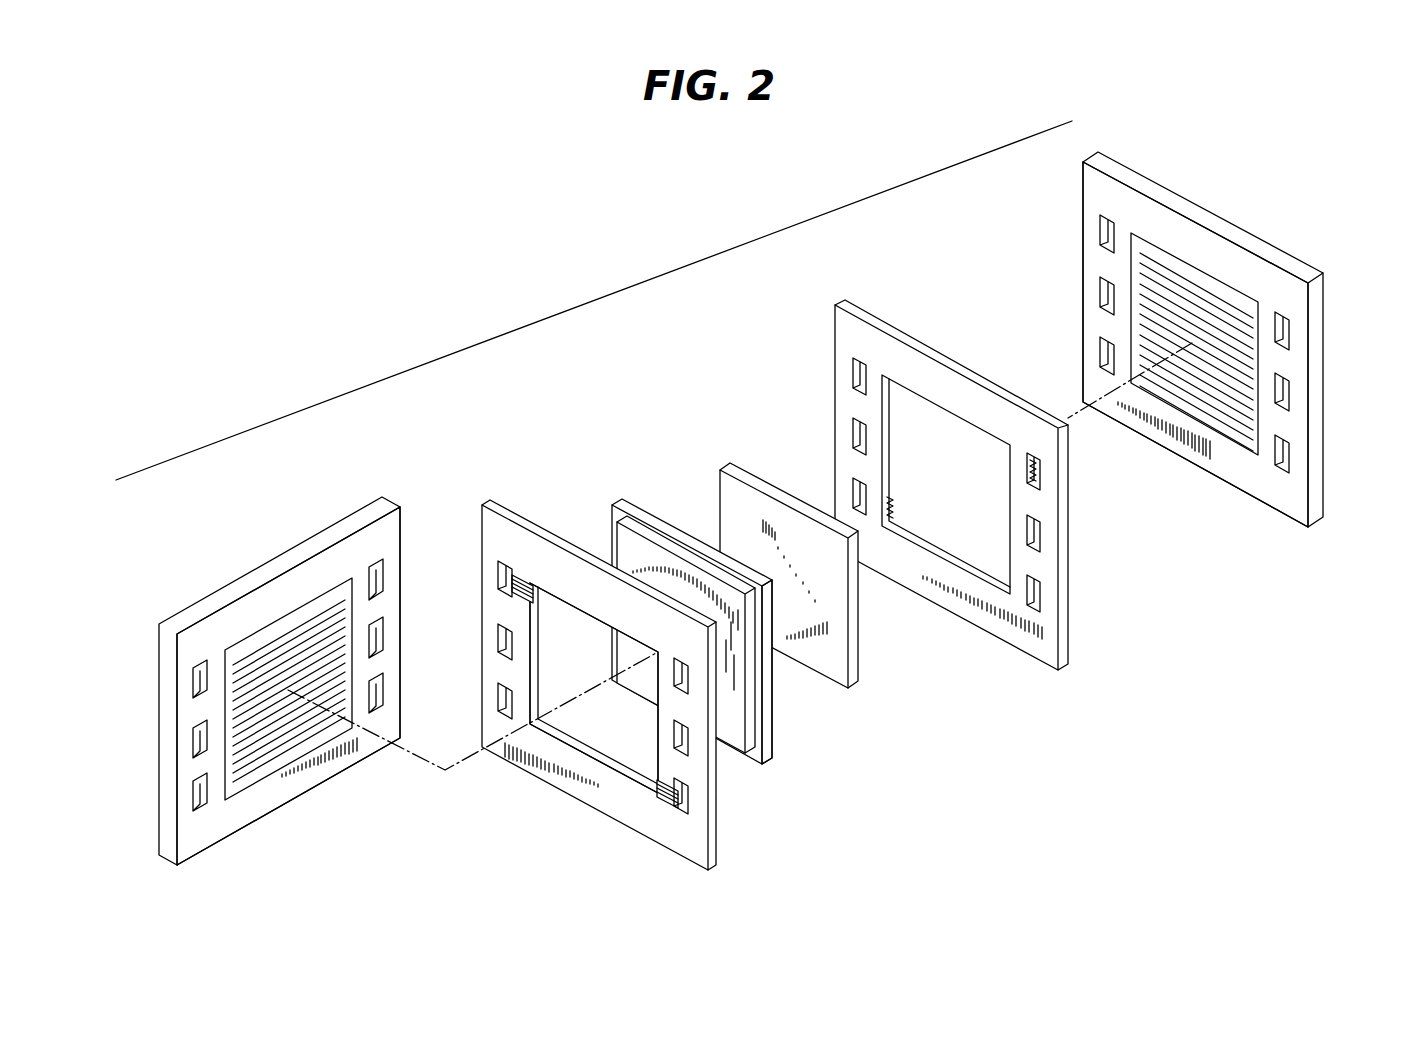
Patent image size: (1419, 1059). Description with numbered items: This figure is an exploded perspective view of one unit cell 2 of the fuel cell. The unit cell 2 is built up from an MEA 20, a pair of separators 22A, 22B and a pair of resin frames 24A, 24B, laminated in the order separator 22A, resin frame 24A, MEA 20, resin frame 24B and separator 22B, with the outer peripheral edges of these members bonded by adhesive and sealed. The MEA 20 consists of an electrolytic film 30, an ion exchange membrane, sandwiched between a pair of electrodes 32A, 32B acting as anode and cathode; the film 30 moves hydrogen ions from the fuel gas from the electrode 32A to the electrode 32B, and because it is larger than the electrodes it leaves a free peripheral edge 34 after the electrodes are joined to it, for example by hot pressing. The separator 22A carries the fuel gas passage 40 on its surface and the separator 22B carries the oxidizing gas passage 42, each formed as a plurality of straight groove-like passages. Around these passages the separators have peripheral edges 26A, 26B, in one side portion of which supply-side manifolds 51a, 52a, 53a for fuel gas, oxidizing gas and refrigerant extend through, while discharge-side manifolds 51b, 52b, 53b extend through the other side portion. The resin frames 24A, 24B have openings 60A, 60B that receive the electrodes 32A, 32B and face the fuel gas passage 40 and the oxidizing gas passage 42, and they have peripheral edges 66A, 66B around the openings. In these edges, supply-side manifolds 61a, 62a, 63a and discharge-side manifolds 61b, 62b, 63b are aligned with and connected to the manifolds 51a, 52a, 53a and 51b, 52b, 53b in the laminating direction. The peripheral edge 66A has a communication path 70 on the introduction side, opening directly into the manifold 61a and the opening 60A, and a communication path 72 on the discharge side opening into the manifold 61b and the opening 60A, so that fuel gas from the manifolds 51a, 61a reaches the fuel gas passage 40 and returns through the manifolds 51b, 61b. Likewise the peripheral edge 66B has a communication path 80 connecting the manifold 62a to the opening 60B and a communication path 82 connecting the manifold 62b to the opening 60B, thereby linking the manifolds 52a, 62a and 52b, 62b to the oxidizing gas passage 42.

The unit cell 2 is at (601, 303).
The MEA 20 is at (695, 593).
The separator 22A is at (279, 689).
The separator 22B is at (1203, 349).
The resin frame 24A is at (584, 662).
The resin frame 24B is at (995, 479).
The peripheral edge 26A is at (229, 832).
The peripheral edge 26B is at (1284, 500).
The electrolytic film 30 is at (724, 618).
The electrode 32A is at (620, 552).
The electrode 32B is at (755, 488).
The peripheral edge 34 is at (762, 713).
The fuel gas passage 40 is at (262, 775).
The oxidizing gas passage 42 is at (1222, 430).
The manifold 51a is at (369, 572).
The manifold 51b is at (195, 797).
The manifold 52a is at (380, 695).
The manifold 52b is at (195, 673).
The manifold 53a is at (380, 640).
The manifold 53b is at (195, 741).
The opening 60A is at (612, 762).
The opening 60B is at (1006, 483).
The manifold 61a is at (500, 575).
The manifold 61b is at (688, 802).
The manifold 62a is at (500, 688).
The manifold 62b is at (683, 748).
The manifold 63a is at (500, 633).
The manifold 63b is at (682, 690).
The peripheral edge 66A is at (563, 787).
The peripheral edge 66B is at (1010, 626).
The communication path 70 is at (520, 579).
The communication path 72 is at (669, 810).
The communication path 80 is at (893, 512).
The communication path 82 is at (1035, 468).